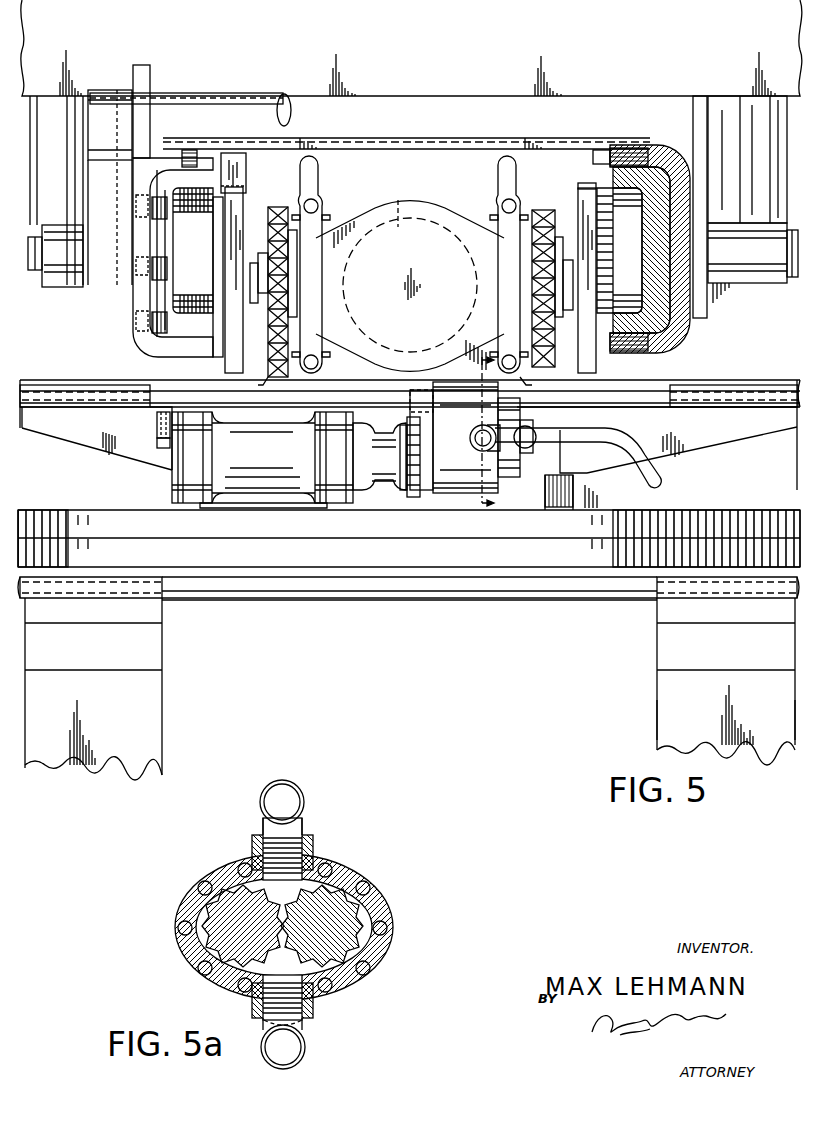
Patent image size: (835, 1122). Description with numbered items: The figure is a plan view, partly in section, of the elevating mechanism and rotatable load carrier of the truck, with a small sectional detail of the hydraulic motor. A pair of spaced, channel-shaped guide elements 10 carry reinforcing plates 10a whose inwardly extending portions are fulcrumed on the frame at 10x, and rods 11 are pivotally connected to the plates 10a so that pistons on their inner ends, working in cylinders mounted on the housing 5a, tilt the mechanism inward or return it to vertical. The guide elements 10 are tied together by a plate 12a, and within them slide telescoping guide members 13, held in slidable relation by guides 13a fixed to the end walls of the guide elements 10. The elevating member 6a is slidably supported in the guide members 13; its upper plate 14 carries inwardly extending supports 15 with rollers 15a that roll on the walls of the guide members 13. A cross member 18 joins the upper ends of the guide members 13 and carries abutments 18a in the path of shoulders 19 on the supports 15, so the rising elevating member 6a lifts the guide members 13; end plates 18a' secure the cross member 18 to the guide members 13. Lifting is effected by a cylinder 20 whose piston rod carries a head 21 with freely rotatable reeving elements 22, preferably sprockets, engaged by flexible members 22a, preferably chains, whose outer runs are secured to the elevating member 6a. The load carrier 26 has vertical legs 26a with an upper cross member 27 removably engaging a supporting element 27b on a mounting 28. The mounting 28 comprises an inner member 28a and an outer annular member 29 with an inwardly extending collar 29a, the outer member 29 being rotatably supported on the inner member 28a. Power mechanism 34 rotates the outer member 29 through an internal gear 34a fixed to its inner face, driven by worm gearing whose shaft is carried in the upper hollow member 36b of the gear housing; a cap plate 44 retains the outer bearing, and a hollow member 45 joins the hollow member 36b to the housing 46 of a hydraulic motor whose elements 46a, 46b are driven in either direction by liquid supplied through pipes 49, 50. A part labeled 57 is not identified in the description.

In FIG. 5, the housing 5a is at (475, 446).
In FIG. 5, the elevating member 6a is at (88, 377).
In FIG. 5, the guide elements 10 is at (140, 333).
In FIG. 5, the reinforcing plates 10a is at (118, 300).
In FIG. 5, the fulcrum 10x is at (34, 278).
In FIG. 5, the rods 11 is at (40, 108).
In FIG. 5, the plate 12a is at (375, 145).
In FIG. 5, the guide members 13 is at (165, 340).
In FIG. 5, the guides 13a is at (197, 170).
In FIG. 5, the upper plate 14 is at (756, 377).
In FIG. 5, the supports 15 is at (236, 235).
In FIG. 5, the rollers 15a is at (187, 230).
In FIG. 5, the cross member 18 is at (249, 100).
In FIG. 5, the abutments 18a is at (255, 173).
In FIG. 5, the end plates 18a' is at (165, 111).
In FIG. 5, the shoulders 19 is at (580, 185).
In FIG. 5, the cylinder 20 is at (397, 208).
In FIG. 5, the head 21 is at (462, 225).
In FIG. 5, the reeving elements 22 is at (291, 298).
In FIG. 5, the flexible members 22a is at (257, 371).
In FIG. 5, the load carrier 26 is at (702, 731).
In FIG. 5, the vertical legs 26a is at (162, 655).
In FIG. 5, the upper cross member 27 is at (87, 587).
In FIG. 5, the supporting element 27b is at (261, 591).
In FIG. 5, the mounting 28 is at (715, 477).
In FIG. 5, the inner member 28a is at (754, 434).
In FIG. 5, the outer member 29 is at (414, 567).
In FIG. 5, the collar 29a is at (524, 505).
In FIG. 5, the power mechanism 34 is at (528, 498).
In FIG. 5, the internal gear 34a is at (750, 511).
In FIG. 5, the hollow member 36b is at (262, 460).
In FIG. 5, the cap plate 44 is at (172, 470).
In FIG. 5, the hollow member 45 is at (379, 456).
In FIG. 5a, the motor housing 46 is at (386, 887).
In FIG. 5a, the motor element 46a is at (176, 950).
In FIG. 5a, the motor element 46b is at (378, 942).
In FIG. 5a, the pipe 49 is at (303, 1043).
In FIG. 5, the pipe 50 is at (566, 439).
In FIG. 5a, the pipe 50 is at (303, 797).
In FIG. 5, the roller 57 is at (300, 207).